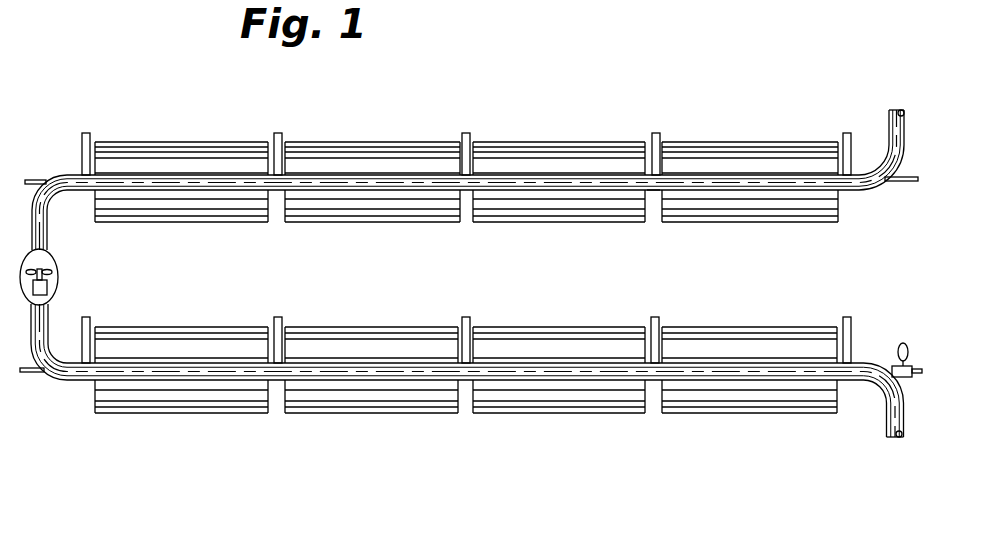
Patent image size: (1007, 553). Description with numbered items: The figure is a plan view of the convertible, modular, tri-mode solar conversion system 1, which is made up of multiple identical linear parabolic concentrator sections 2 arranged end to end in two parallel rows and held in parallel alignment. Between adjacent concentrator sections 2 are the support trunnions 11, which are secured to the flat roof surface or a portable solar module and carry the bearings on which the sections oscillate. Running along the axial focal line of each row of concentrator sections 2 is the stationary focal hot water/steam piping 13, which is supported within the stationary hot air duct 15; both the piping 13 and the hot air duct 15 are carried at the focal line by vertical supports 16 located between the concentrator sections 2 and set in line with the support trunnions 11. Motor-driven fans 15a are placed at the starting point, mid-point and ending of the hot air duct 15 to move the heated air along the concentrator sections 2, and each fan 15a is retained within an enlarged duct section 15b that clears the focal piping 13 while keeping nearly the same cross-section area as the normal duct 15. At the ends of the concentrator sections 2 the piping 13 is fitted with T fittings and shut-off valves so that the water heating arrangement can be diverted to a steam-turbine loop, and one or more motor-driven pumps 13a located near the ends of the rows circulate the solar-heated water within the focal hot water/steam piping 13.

The convertible, modular tri-mode solar conversion system 1 is at (123, 141).
The linear parabolic concentrator section 2 is at (195, 141).
The support trunnion 11 is at (472, 133).
The stationary focal hot water/steam piping 13 is at (46, 166).
The motor-driven pump 13a is at (912, 322).
The stationary hot air duct 15 is at (888, 112).
The motor-driven fan 15a is at (48, 272).
The enlarged duct section 15b is at (58, 283).
The vertical support 16 is at (653, 193).